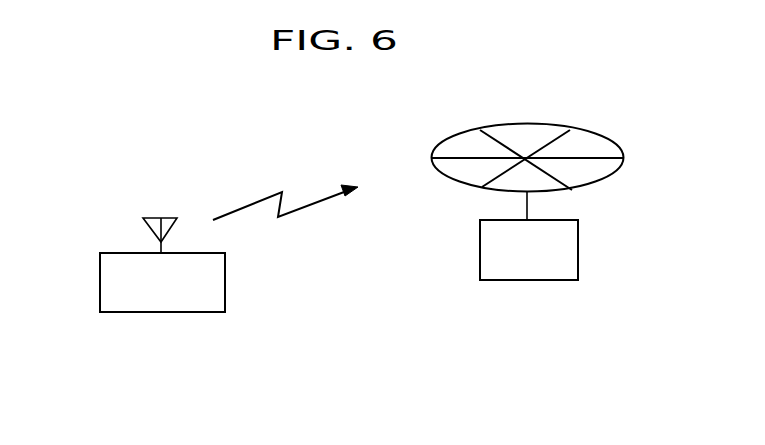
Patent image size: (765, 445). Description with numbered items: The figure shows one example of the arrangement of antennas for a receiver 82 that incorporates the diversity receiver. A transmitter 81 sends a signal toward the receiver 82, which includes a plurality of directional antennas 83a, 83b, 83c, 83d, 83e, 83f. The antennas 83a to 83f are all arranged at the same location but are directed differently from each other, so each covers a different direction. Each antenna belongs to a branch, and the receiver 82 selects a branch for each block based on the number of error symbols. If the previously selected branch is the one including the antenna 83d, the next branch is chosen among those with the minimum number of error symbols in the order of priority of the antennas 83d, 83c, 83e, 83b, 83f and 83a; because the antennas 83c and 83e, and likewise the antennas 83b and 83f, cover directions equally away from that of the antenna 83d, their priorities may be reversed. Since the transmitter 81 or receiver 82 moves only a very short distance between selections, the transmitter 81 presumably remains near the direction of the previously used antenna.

The transmitter 81 is at (100, 283).
The receiver 82 is at (480, 249).
The directional antenna 83a is at (465, 147).
The directional antenna 83b is at (528, 137).
The directional antenna 83c is at (588, 145).
The directional antenna 83d is at (588, 165).
The directional antenna 83e is at (552, 184).
The directional antenna 83f is at (465, 173).